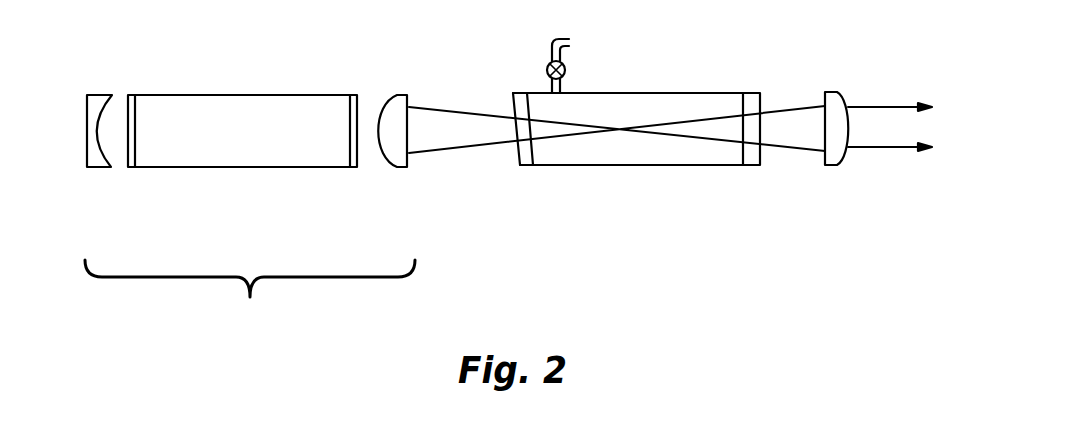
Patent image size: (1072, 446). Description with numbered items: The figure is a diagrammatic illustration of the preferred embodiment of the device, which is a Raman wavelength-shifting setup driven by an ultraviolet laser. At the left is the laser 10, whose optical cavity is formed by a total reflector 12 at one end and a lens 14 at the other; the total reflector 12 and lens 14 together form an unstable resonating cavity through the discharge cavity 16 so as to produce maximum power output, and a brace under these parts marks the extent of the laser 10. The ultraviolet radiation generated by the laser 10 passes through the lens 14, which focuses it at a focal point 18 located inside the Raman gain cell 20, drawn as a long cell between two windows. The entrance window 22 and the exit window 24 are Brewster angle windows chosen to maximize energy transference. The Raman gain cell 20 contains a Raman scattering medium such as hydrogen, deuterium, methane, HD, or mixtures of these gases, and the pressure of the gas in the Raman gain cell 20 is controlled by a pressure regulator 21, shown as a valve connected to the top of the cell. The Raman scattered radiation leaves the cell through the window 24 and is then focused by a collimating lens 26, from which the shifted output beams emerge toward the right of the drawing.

The laser 10 is at (250, 306).
The total reflector 12 is at (93, 95).
The lens 14 is at (401, 93).
The discharge cavity 16 is at (242, 152).
The focal point 18 is at (619, 128).
The Raman gain cell 20 is at (623, 166).
The pressure regulator 21 is at (547, 72).
The window 22 is at (528, 166).
The window 24 is at (743, 166).
The collimating lens 26 is at (838, 166).